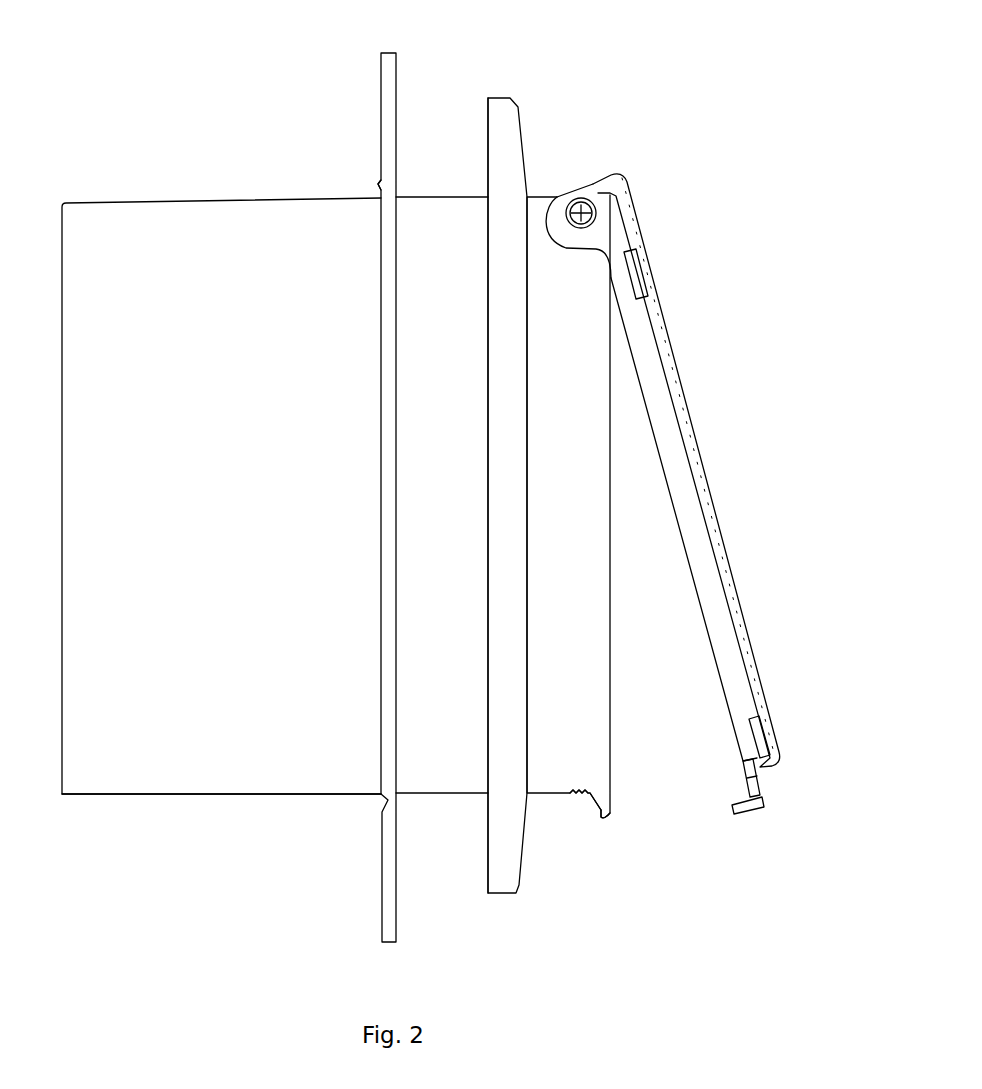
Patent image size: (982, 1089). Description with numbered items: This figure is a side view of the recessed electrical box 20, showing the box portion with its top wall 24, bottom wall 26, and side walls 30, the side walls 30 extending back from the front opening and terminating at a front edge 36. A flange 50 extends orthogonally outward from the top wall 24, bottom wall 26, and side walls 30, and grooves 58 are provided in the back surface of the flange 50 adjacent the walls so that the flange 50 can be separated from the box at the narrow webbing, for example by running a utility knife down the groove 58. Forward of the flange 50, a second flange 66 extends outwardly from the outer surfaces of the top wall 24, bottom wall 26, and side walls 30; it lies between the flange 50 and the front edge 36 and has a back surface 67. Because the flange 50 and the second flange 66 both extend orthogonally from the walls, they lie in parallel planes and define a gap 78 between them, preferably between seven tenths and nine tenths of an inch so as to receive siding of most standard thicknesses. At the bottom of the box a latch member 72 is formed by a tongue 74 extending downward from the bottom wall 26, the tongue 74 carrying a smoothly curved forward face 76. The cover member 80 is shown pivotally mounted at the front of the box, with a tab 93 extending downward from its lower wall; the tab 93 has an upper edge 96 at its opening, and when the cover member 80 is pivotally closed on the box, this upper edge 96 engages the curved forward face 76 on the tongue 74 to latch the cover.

The recessed electrical box 20 is at (190, 150).
The top wall 24 is at (407, 178).
The bottom wall 26 is at (303, 812).
The side walls 30 is at (217, 478).
The front edge 36 is at (630, 630).
The flange 50 is at (397, 52).
The grooves 58 is at (380, 190).
The second flange 66 is at (518, 103).
The back surface 67 is at (470, 122).
The latch member 72 is at (575, 822).
The tongue 74 is at (603, 800).
The forward face 76 is at (610, 818).
The gap 78 is at (437, 855).
The cover member 80 is at (703, 468).
The tab 93 is at (766, 800).
The upper edge 96 is at (757, 786).